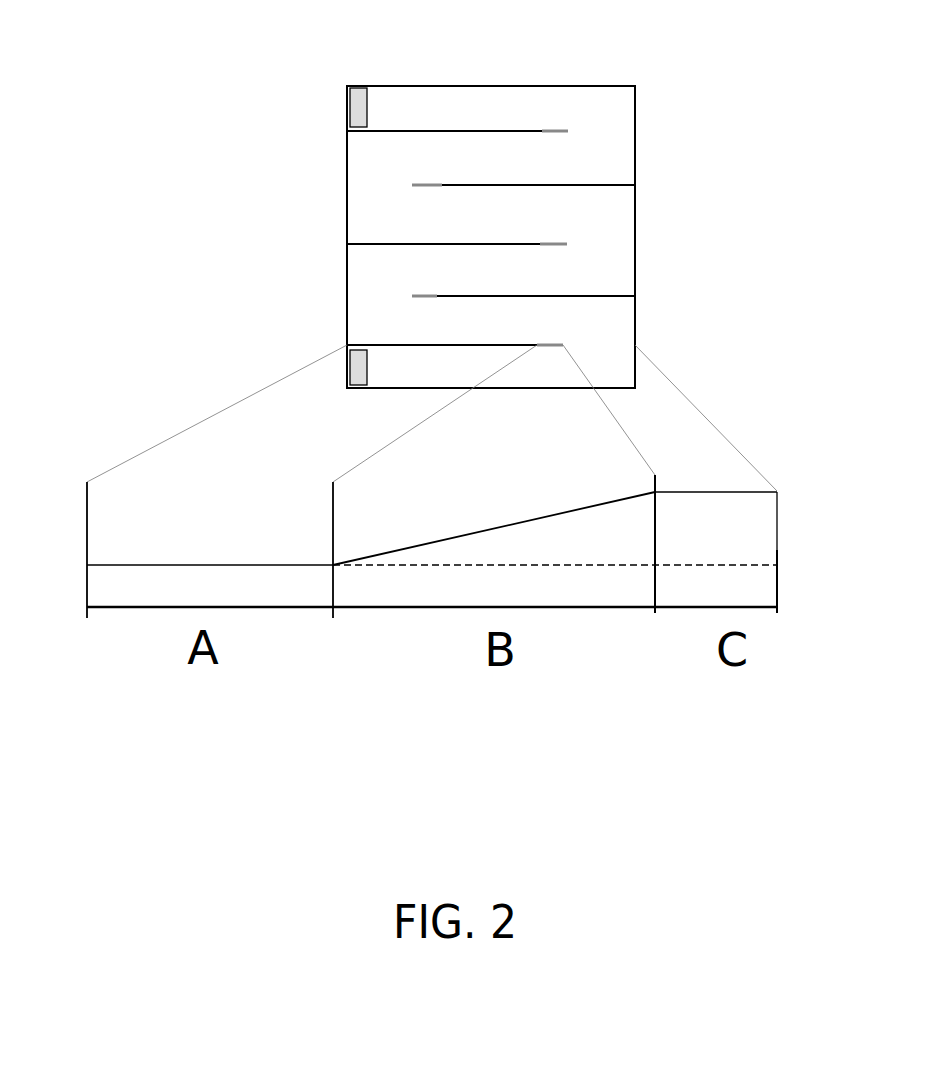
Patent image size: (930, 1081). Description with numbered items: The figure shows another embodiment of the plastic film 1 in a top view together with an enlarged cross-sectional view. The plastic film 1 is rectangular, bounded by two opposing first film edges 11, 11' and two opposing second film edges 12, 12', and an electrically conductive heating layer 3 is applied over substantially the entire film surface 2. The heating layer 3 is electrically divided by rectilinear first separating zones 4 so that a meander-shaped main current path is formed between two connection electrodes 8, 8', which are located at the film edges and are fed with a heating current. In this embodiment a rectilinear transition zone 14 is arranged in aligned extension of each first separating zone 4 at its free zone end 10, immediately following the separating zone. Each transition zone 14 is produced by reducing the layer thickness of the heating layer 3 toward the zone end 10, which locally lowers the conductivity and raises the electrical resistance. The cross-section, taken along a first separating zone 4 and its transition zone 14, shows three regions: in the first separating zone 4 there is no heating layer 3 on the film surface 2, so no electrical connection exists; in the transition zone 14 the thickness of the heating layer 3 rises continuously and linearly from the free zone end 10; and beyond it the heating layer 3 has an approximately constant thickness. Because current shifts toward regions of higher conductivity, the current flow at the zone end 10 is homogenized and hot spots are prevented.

The plastic film 1 is at (311, 56).
The film surface 2 is at (217, 561).
The heating layer 3 is at (555, 528).
The first separating zone 4 is at (434, 131).
The connection electrode 8 is at (327, 106).
The connection electrode 8' is at (327, 386).
The free zone end 10 is at (540, 131).
The first film edge 11 is at (316, 237).
The first film edge 11' is at (668, 237).
The second film edge 12 is at (491, 60).
The second film edge 12' is at (491, 416).
The transition zone 14 is at (557, 131).